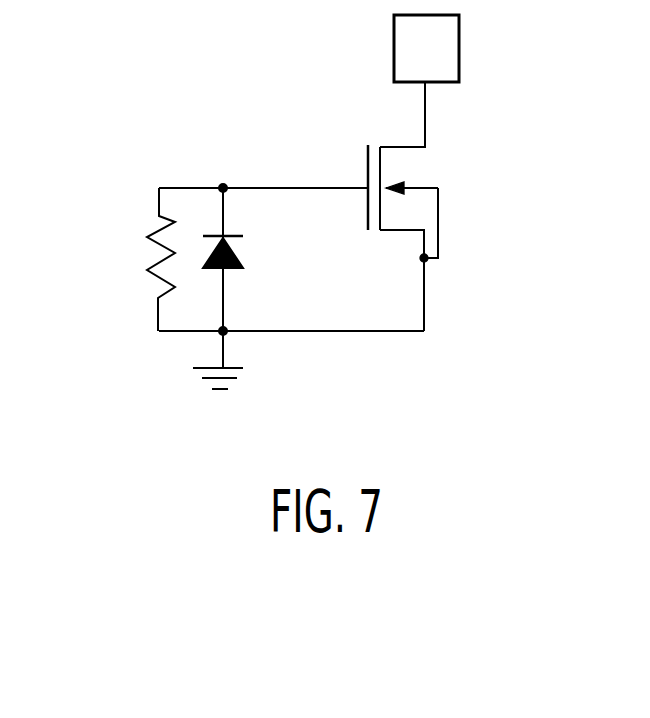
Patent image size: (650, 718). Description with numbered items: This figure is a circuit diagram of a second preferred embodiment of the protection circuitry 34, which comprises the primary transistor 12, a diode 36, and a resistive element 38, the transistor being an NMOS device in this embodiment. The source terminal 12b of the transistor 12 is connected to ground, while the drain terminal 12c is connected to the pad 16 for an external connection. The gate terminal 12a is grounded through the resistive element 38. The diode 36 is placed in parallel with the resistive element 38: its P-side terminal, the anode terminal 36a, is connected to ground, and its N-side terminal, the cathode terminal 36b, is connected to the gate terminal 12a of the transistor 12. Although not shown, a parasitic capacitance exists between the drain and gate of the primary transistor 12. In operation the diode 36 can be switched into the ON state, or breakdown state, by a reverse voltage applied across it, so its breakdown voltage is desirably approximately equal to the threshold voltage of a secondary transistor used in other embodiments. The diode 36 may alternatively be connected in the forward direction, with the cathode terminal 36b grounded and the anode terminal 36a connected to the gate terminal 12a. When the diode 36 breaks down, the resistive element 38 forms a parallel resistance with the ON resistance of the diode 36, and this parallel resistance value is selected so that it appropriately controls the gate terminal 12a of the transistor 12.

The protection circuitry 34 is at (241, 161).
The pad 16 is at (447, 61).
The primary transistor 12 is at (380, 220).
The gate terminal 12a is at (336, 188).
The source terminal 12b is at (424, 278).
The drain terminal 12c is at (425, 133).
The diode 36 is at (233, 252).
The P-side terminal (anode terminal) 36a is at (223, 312).
The N-side terminal (cathode terminal) 36b is at (222, 216).
The resistive element 38 is at (150, 262).